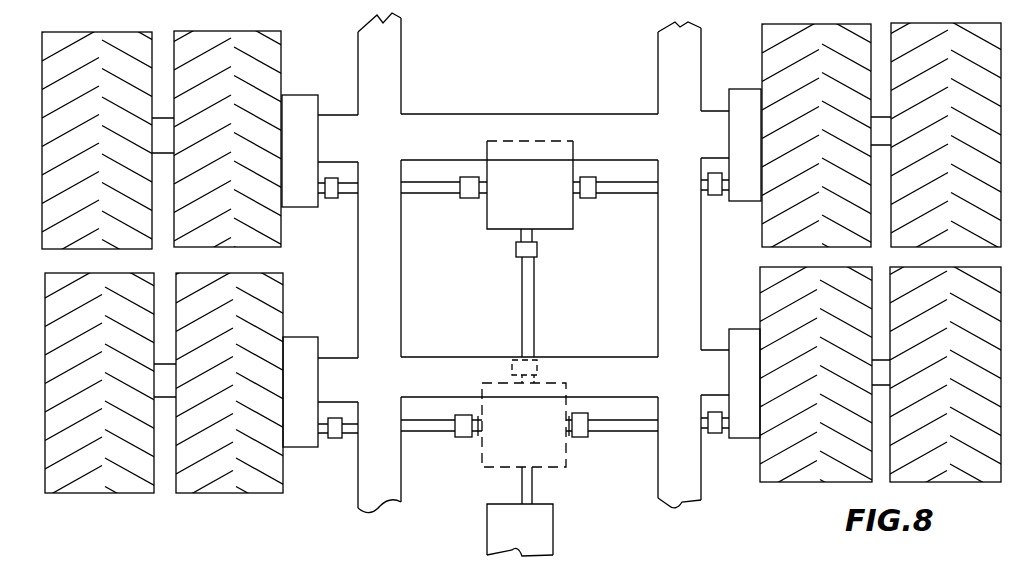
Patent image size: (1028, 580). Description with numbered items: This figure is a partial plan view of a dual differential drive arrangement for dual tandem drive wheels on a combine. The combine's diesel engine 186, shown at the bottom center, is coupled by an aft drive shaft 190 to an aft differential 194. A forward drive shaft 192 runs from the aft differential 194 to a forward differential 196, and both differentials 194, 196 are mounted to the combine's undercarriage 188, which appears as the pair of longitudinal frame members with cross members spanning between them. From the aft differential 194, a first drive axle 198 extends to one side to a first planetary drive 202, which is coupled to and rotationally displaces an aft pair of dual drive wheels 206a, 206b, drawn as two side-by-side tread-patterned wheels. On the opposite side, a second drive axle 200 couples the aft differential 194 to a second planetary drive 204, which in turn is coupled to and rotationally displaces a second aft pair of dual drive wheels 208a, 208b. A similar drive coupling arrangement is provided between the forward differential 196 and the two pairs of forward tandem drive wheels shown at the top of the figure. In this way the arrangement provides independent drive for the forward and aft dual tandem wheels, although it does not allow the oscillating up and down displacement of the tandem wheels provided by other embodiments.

The diesel engine 186 is at (545, 540).
The undercarriage 188 is at (700, 478).
The aft drive shaft 190 is at (535, 487).
The forward drive shaft 192 is at (535, 303).
The aft differential 194 is at (542, 440).
The forward differential 196 is at (550, 200).
The first drive axle 198 is at (608, 431).
The second drive axle 200 is at (425, 431).
The first planetary drive 202 is at (749, 338).
The second planetary drive 204 is at (303, 343).
The dual drive wheel 206a is at (790, 477).
The dual drive wheel 206b is at (945, 480).
The dual drive wheel 208a is at (60, 482).
The dual drive wheel 208b is at (195, 480).